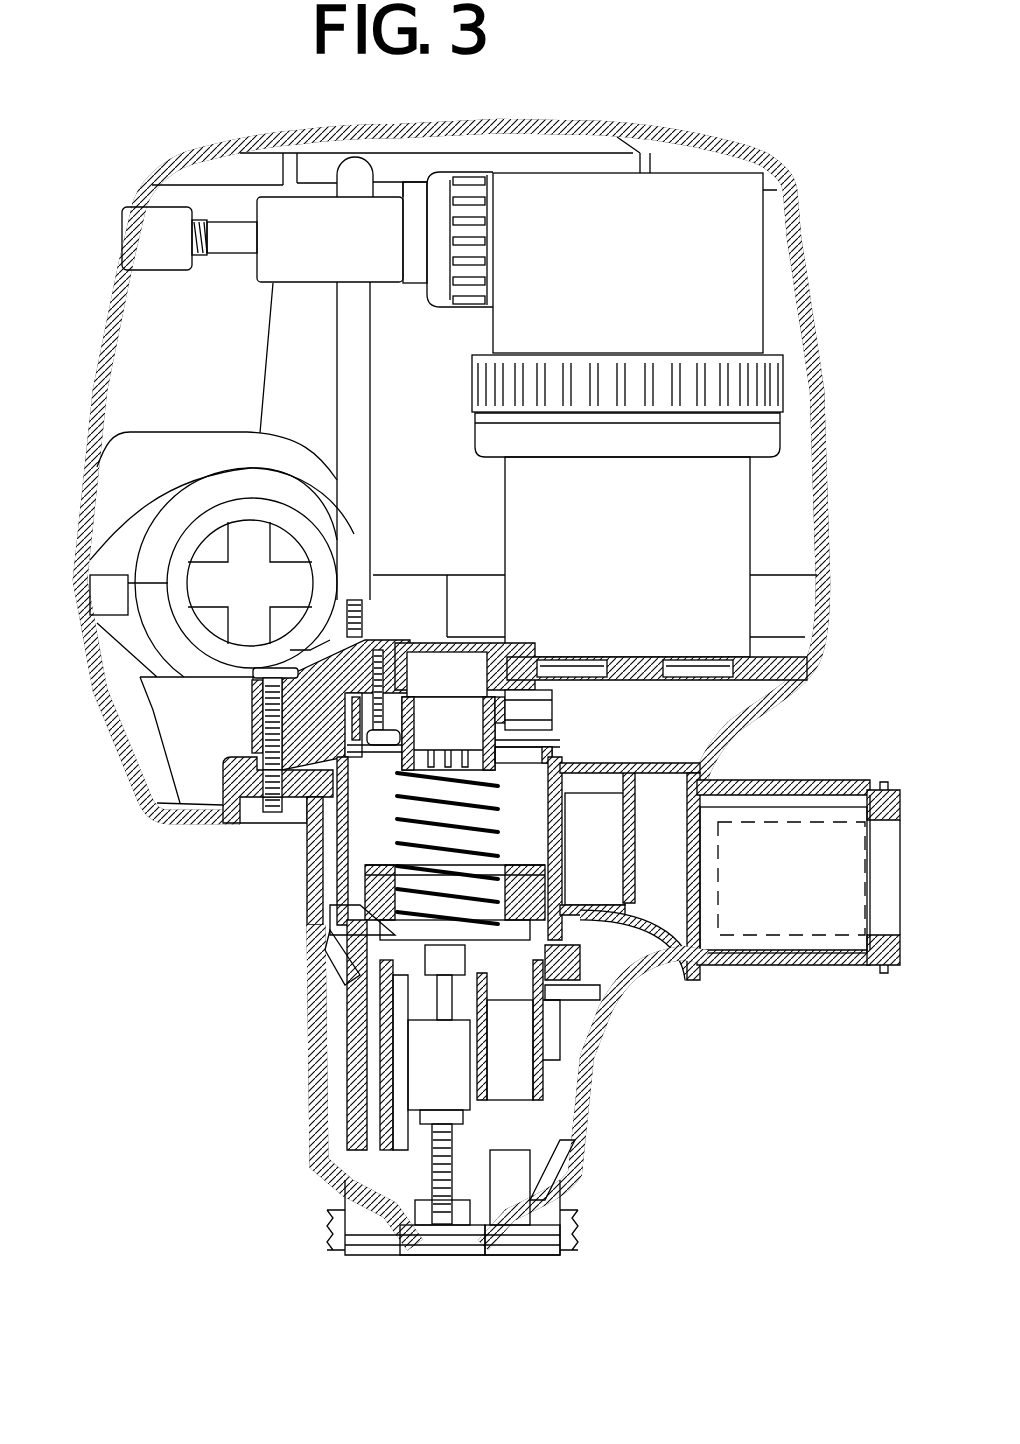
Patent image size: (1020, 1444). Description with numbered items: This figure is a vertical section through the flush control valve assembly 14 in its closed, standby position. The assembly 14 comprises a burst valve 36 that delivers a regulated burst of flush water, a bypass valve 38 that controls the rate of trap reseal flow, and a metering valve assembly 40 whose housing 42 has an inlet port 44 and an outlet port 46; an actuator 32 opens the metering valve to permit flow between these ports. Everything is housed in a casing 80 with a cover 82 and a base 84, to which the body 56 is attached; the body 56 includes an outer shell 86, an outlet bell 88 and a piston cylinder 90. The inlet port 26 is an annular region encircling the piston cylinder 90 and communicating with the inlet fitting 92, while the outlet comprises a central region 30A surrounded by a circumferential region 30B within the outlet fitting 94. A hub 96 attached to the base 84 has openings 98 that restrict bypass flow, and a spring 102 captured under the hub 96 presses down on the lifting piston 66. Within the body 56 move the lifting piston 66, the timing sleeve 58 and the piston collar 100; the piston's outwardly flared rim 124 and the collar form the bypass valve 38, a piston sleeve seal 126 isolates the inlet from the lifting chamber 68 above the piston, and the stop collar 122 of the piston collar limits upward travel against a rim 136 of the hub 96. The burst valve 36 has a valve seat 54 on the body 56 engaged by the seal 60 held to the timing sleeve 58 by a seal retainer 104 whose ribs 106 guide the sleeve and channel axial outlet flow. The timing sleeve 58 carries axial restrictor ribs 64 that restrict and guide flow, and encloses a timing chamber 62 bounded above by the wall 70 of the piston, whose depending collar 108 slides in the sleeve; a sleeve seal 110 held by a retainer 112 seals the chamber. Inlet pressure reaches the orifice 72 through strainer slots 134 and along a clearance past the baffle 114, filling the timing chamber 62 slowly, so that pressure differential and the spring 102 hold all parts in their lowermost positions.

The valve assembly 14 is at (796, 116).
The inlet port 26 is at (307, 867).
The central region of outlet port 30A is at (443, 1247).
The circumferential region of outlet port 30B is at (525, 1248).
The actuator 32 is at (130, 232).
The burst valve 36 is at (285, 1140).
The bypass valve 38 is at (275, 905).
The metering valve assembly 40 is at (632, 272).
The housing 42 is at (515, 493).
The inlet port 44 is at (580, 665).
The outlet port 46 is at (697, 665).
The valve seat 54 is at (412, 1217).
The body 56 is at (353, 1015).
The timing sleeve 58 is at (572, 1045).
The valve portion 60 is at (403, 1233).
The timing chamber 62 is at (456, 1103).
The restrictor structure 64 is at (375, 1097).
The lifting piston 66 is at (320, 1027).
The lifting chamber 68 is at (552, 791).
The portion of lifting piston 70 is at (330, 975).
The orifice 72 is at (445, 1018).
The casing 80 is at (204, 146).
The cover 82 is at (815, 272).
The base 84 is at (828, 598).
The outer shell 86 is at (712, 785).
The outlet bell 88 is at (493, 1253).
The piston cylinder 90 is at (350, 800).
The inlet fitting 92 is at (850, 795).
The outlet fitting 94 is at (575, 1226).
The hub 96 is at (445, 717).
The openings 98 is at (533, 697).
The piston collar 100 is at (580, 952).
The spring 102 is at (545, 825).
The seal retainer 104 is at (550, 1192).
The ribs 106 is at (427, 1240).
The depending collar 108 is at (555, 1105).
The sleeve seal 110 is at (592, 1010).
The retainer 112 is at (570, 1075).
The baffle 114 is at (345, 925).
The stop collar 122 is at (558, 866).
The rim 124 is at (370, 867).
The piston sleeve seal 126 is at (610, 900).
The strainer slots 134 is at (563, 960).
The rim 136 is at (553, 748).